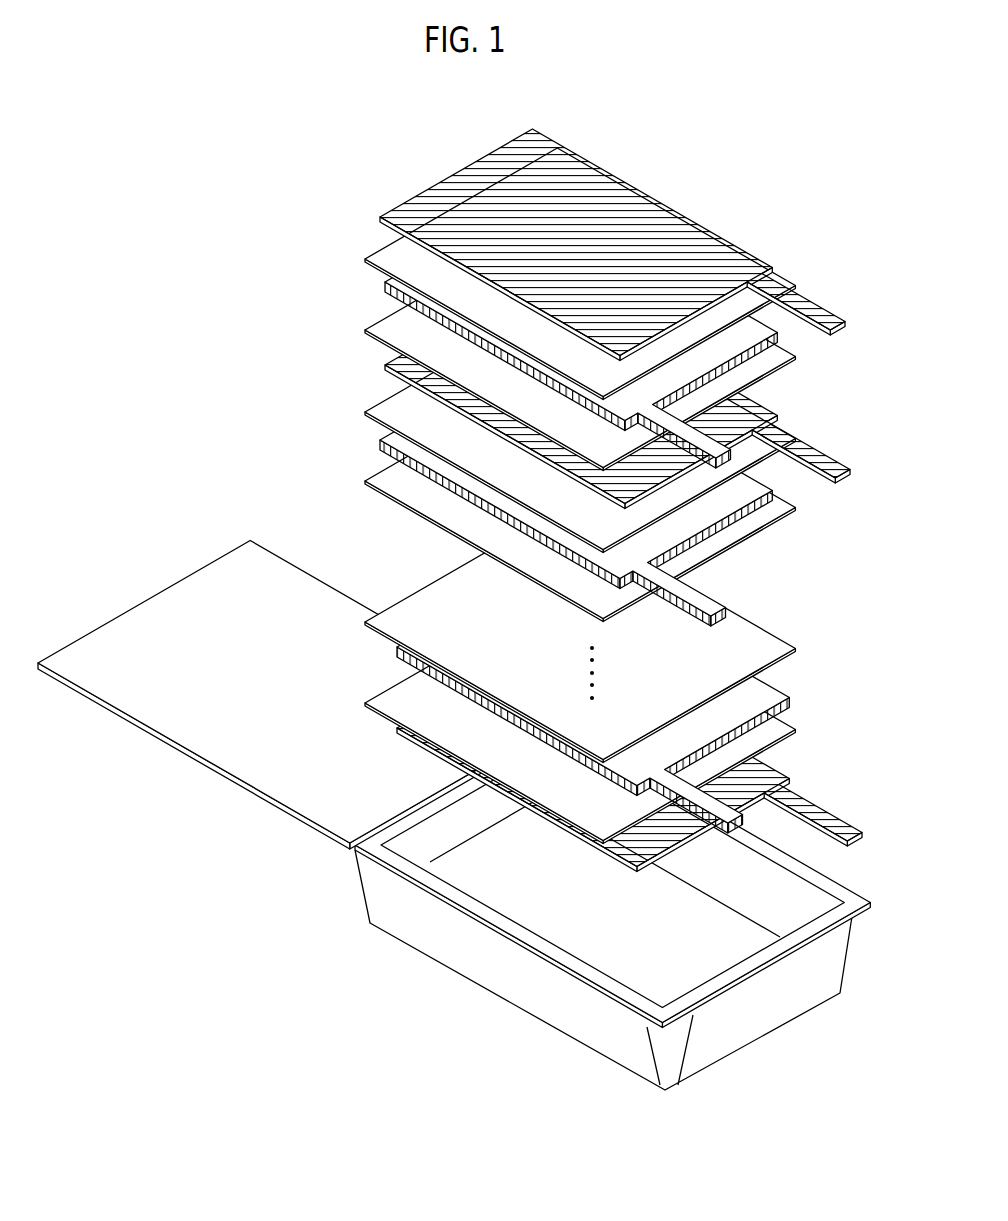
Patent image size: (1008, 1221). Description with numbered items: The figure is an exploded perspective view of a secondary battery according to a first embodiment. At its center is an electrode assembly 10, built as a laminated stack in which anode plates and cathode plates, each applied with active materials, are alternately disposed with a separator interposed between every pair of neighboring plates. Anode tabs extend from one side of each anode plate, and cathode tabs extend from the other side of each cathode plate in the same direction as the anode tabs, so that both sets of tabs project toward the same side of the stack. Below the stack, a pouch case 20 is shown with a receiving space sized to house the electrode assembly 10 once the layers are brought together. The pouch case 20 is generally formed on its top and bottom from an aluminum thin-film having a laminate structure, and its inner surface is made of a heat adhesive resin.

The electrode assembly 10 is at (613, 496).
The pouch case 20 is at (322, 820).